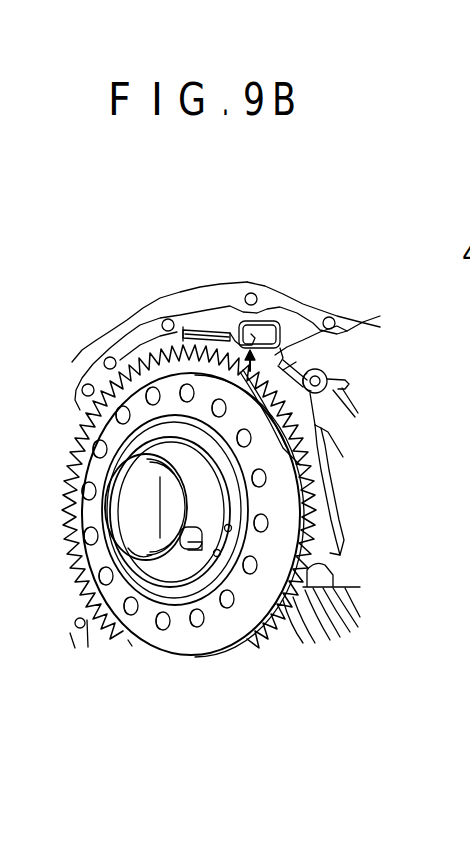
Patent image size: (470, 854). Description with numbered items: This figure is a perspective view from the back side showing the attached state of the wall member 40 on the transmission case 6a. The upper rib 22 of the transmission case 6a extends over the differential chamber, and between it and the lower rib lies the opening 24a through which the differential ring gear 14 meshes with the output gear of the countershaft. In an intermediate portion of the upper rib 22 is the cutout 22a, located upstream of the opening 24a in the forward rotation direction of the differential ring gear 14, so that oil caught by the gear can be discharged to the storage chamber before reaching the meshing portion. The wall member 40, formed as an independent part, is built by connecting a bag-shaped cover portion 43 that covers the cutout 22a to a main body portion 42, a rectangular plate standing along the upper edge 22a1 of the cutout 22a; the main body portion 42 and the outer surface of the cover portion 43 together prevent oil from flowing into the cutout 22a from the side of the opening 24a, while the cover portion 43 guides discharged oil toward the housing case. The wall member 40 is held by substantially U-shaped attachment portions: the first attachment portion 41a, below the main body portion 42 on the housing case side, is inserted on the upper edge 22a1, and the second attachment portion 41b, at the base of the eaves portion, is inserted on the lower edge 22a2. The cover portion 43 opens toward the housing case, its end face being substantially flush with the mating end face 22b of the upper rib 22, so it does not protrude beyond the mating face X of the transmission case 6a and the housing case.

The differential ring gear 14 is at (68, 483).
The mating face X is at (80, 410).
The transmission case 6a is at (98, 348).
The wall member 40 is at (286, 303).
The first attachment portion 41a is at (283, 370).
The second attachment portion 41b is at (229, 332).
The main body portion 42 is at (276, 354).
The cover portion 43 is at (224, 326).
The upper rib 22 is at (329, 374).
The cutout 22a is at (330, 482).
The upper edge of the cutout 22a1 is at (286, 368).
The lower edge of the cutout 22a2 is at (240, 331).
The mating end face 22b is at (349, 388).
The opening 24a is at (340, 437).